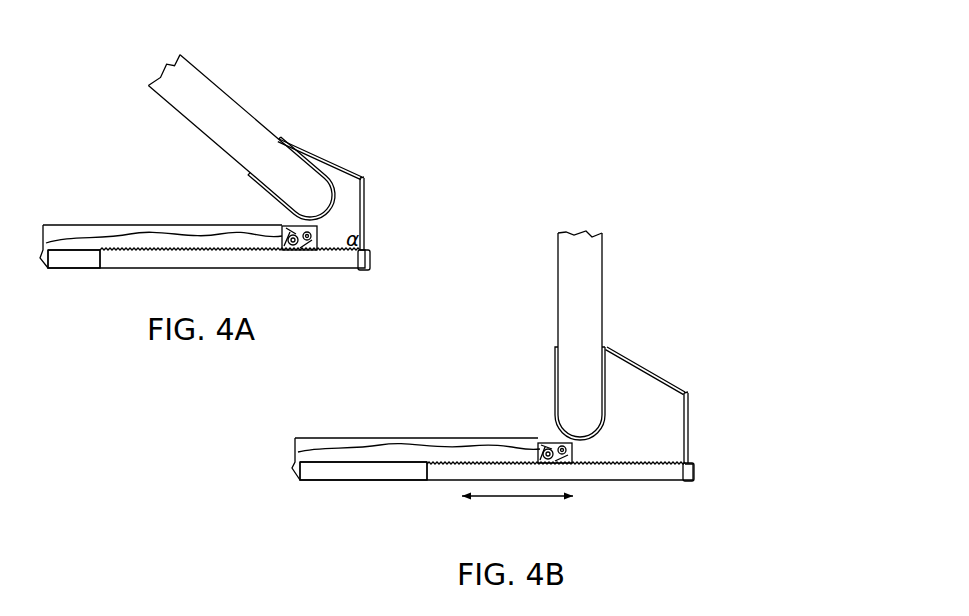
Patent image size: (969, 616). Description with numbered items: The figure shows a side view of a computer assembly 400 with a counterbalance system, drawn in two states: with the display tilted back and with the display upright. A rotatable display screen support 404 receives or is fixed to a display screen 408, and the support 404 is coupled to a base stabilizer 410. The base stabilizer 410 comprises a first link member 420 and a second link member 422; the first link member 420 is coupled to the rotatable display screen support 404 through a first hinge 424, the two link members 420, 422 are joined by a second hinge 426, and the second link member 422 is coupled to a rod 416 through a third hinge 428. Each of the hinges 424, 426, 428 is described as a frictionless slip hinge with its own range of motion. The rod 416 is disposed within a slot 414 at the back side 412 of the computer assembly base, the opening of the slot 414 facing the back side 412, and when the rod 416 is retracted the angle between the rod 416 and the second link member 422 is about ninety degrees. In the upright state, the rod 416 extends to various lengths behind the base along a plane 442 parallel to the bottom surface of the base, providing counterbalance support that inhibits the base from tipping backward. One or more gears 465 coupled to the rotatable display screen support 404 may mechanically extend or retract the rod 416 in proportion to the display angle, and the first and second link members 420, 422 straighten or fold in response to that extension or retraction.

In FIG. 4A, the computer assembly 400 is at (329, 109).
In FIG. 4B, the computer assembly 400 is at (645, 284).
In FIG. 4A, the rotatable display screen support 404 is at (245, 171).
In FIG. 4B, the rotatable display screen support 404 is at (553, 372).
In FIG. 4A, the display screen 408 is at (213, 85).
In FIG. 4B, the display screen 408 is at (588, 262).
In FIG. 4A, the base stabilizer 410 is at (359, 181).
In FIG. 4B, the base stabilizer 410 is at (686, 393).
In FIG. 4A, the back side 412 is at (437, 235).
In FIG. 4B, the back side 412 is at (719, 463).
In FIG. 4A, the slot 414 is at (82, 258).
In FIG. 4B, the slot 414 is at (345, 472).
In FIG. 4A, the rod 416 is at (308, 260).
In FIG. 4B, the rod 416 is at (607, 476).
In FIG. 4A, the first link member 420 is at (323, 157).
In FIG. 4B, the first link member 420 is at (648, 368).
In FIG. 4A, the second link member 422 is at (364, 213).
In FIG. 4B, the second link member 422 is at (689, 430).
In FIG. 4A, the first hinge 424 is at (280, 137).
In FIG. 4B, the first hinge 424 is at (607, 349).
In FIG. 4A, the second hinge 426 is at (365, 177).
In FIG. 4B, the second hinge 426 is at (689, 393).
In FIG. 4A, the third hinge 428 is at (364, 272).
In FIG. 4B, the third hinge 428 is at (688, 483).
In FIG. 4B, the plane 442 is at (508, 497).
In FIG. 4A, the gears 465 is at (280, 234).
In FIG. 4B, the gears 465 is at (533, 452).